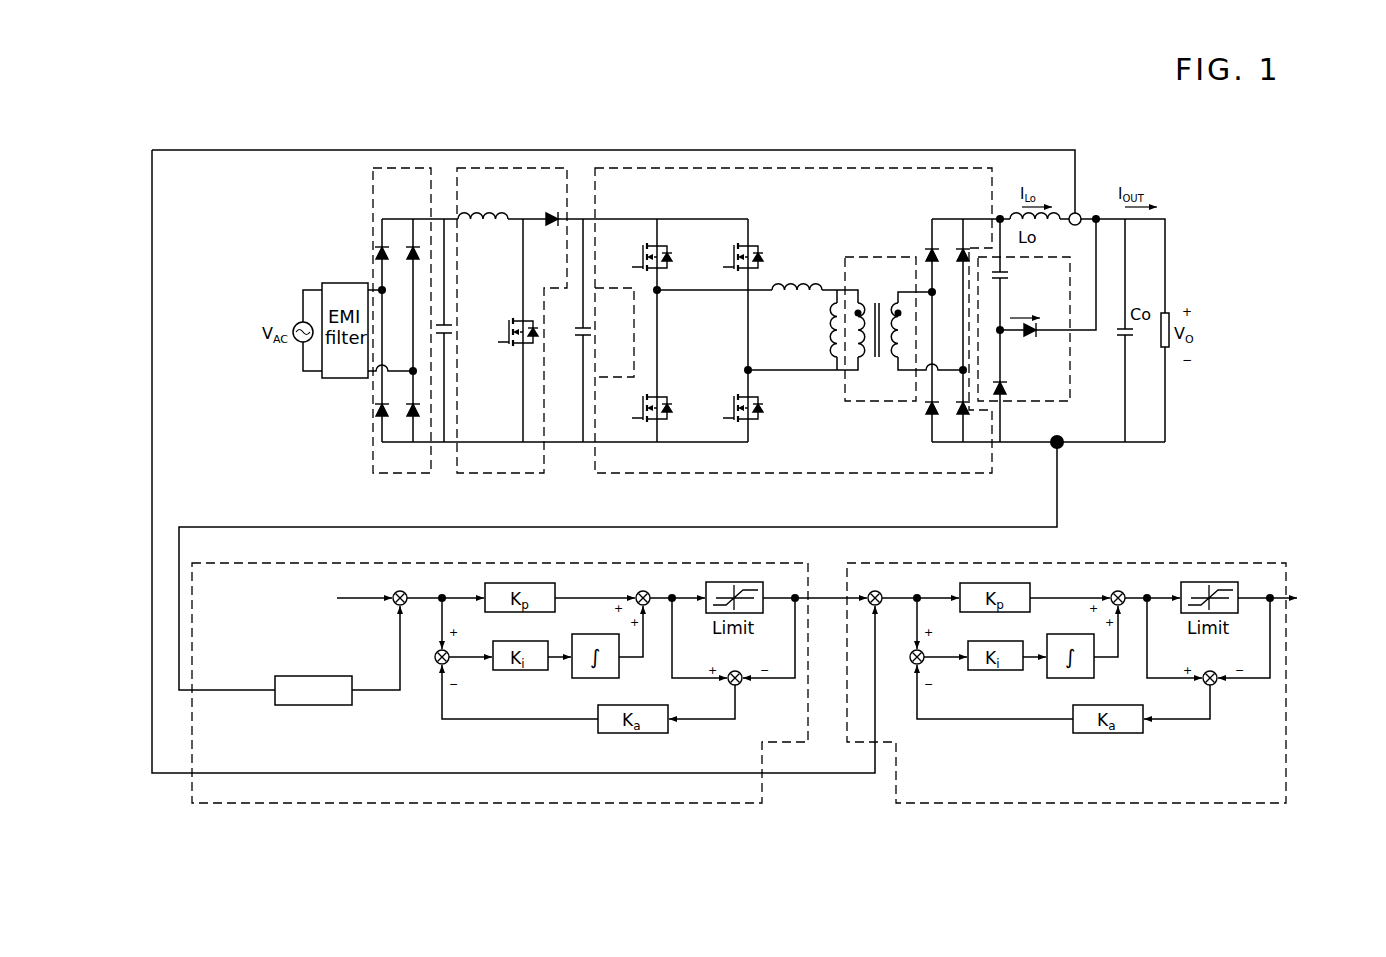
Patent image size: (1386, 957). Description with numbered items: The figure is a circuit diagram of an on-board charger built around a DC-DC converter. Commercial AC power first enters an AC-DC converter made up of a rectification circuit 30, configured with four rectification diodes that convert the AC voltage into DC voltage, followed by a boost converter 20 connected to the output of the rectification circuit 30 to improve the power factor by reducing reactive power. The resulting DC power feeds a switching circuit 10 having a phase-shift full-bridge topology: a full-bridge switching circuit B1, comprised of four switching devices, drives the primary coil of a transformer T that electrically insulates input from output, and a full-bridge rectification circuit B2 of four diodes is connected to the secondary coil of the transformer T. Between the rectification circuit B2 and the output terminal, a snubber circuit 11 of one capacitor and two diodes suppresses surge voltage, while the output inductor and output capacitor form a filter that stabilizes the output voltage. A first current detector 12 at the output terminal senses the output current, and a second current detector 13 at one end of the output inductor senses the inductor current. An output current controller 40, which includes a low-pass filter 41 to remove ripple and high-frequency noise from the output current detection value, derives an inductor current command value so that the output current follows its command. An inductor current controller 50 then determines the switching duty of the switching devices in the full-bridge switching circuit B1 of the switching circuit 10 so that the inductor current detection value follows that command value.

The switching circuit 10 is at (828, 168).
The snubber circuit 11 is at (1072, 273).
The first current detector 12 is at (1063, 438).
The second current detector 13 is at (1085, 226).
The boost converter 20 is at (512, 168).
The rectification circuit 30 is at (408, 168).
The output current controller 40 is at (529, 719).
The low-pass filter 41 is at (313, 705).
The inductor current controller 50 is at (1107, 803).
The full-bridge switching circuit B1 is at (698, 204).
The full-bridge rectification circuit B2 is at (947, 204).
The transformer T is at (866, 257).